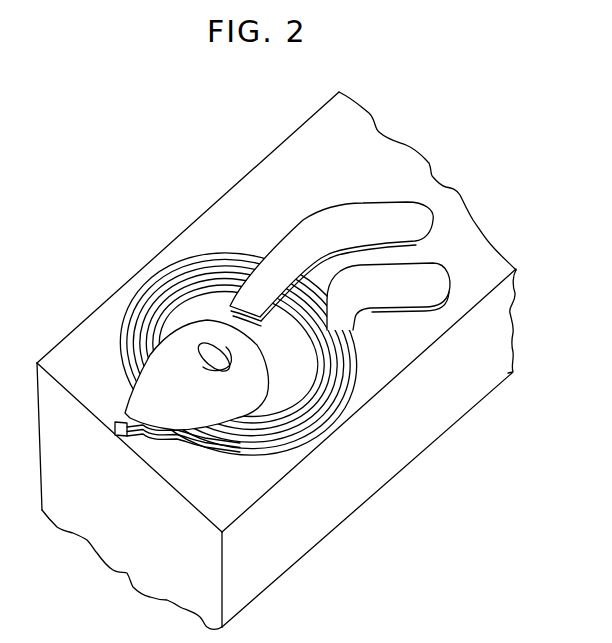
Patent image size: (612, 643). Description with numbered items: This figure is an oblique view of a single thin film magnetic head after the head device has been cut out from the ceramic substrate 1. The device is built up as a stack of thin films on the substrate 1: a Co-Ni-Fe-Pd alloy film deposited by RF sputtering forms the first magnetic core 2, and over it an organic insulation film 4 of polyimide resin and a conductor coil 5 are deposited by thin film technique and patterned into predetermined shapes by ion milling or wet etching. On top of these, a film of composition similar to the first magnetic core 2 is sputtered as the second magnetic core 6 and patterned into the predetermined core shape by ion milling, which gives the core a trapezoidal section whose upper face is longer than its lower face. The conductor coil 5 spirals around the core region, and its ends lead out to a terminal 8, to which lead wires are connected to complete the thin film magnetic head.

The ceramic substrate 1 is at (293, 550).
The first magnetic core 2 is at (149, 437).
The organic insulation film 4 is at (171, 436).
The conductor coil 5 is at (303, 438).
The second magnetic core 6 is at (137, 412).
The terminal 8 is at (414, 208).